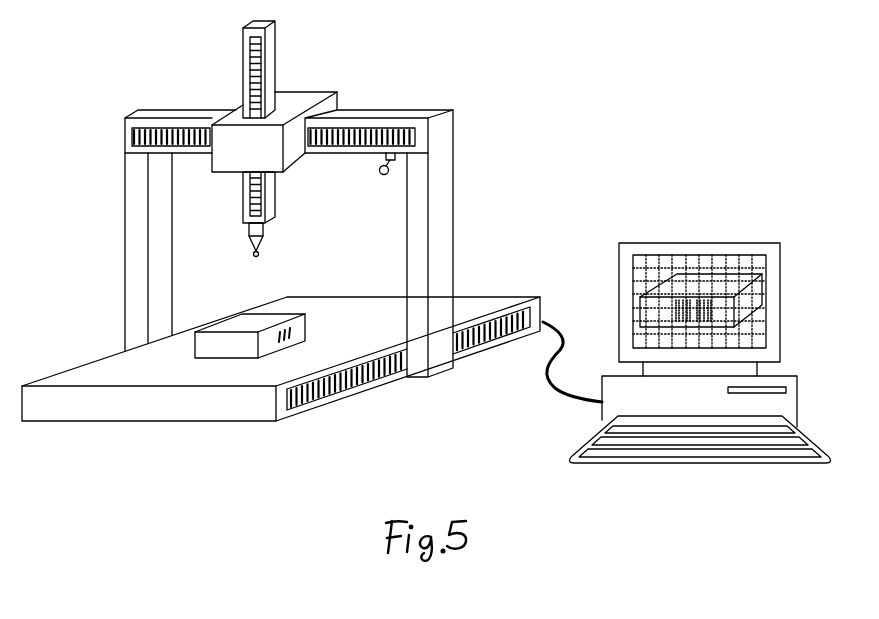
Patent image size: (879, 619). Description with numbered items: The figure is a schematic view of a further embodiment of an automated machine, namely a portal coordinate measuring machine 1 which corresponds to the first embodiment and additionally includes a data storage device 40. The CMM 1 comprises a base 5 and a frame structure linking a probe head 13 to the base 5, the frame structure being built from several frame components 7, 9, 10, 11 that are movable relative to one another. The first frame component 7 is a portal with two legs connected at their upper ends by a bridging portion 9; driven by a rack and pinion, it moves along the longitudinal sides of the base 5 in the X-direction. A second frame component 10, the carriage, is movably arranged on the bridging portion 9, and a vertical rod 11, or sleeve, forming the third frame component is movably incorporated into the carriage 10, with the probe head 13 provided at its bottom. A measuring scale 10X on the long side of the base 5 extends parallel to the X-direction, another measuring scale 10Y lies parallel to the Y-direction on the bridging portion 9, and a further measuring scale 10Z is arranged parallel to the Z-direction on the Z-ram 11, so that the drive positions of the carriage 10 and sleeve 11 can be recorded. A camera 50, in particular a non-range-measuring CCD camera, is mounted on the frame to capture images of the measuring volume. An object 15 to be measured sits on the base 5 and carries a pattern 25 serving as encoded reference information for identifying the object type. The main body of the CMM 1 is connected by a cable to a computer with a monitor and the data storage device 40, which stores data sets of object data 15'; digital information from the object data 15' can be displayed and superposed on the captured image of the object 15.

The coordinate measuring machine 1 is at (469, 76).
The base 5 is at (492, 300).
The first frame component 7 is at (440, 187).
The bridging portion 9 is at (188, 115).
The second frame component 10 is at (293, 101).
The measuring scale 10X is at (370, 373).
The measuring scale 10Y is at (147, 138).
The measuring scale 10Z is at (253, 72).
The vertical rod 11 is at (270, 201).
The probe head 13 is at (259, 237).
The object 15 is at (282, 314).
The object data 15' is at (666, 275).
The pattern 25 is at (295, 320).
The data storage device 40 is at (610, 403).
The camera 50 is at (381, 176).